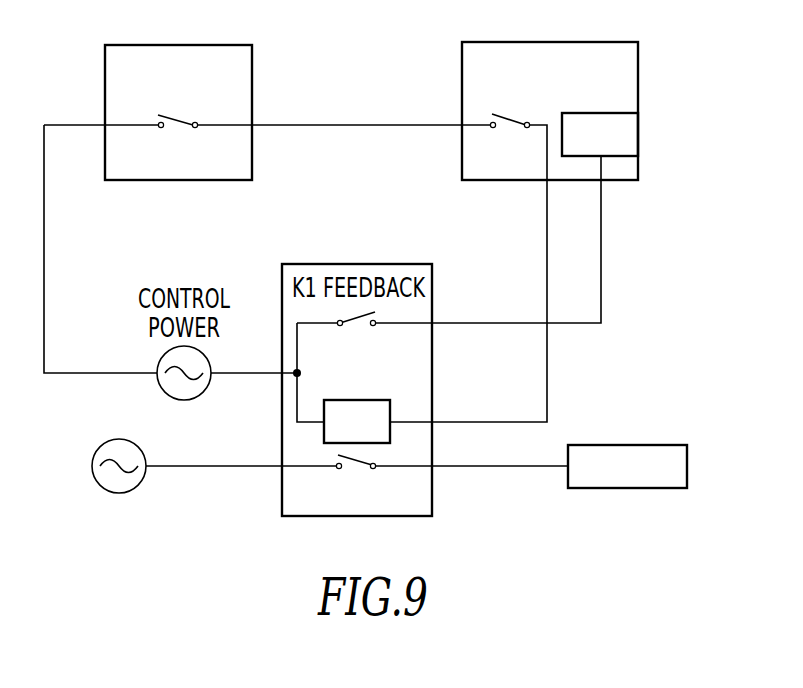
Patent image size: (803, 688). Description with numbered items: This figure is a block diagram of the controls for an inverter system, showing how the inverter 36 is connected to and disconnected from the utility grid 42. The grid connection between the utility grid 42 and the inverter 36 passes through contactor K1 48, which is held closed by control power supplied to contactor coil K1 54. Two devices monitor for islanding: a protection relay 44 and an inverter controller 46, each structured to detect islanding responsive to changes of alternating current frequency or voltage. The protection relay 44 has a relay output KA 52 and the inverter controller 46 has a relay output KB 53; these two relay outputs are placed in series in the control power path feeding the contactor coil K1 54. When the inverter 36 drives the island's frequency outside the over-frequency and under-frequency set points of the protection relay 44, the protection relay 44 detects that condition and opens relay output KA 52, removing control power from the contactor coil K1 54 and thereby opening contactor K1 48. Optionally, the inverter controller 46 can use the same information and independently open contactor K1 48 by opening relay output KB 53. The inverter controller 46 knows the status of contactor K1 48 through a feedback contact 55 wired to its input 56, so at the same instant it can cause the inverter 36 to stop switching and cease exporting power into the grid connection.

The inverter 36 is at (673, 445).
The utility grid 42 is at (97, 448).
The protection relay 44 is at (160, 43).
The inverter controller 46 is at (588, 42).
The contactor K1 48 is at (363, 455).
The relay output KA 52 is at (195, 148).
The relay output KB 53 is at (493, 143).
The contactor coil K1 54 is at (360, 398).
The feedback contact 55 is at (360, 328).
The input 56 is at (627, 157).